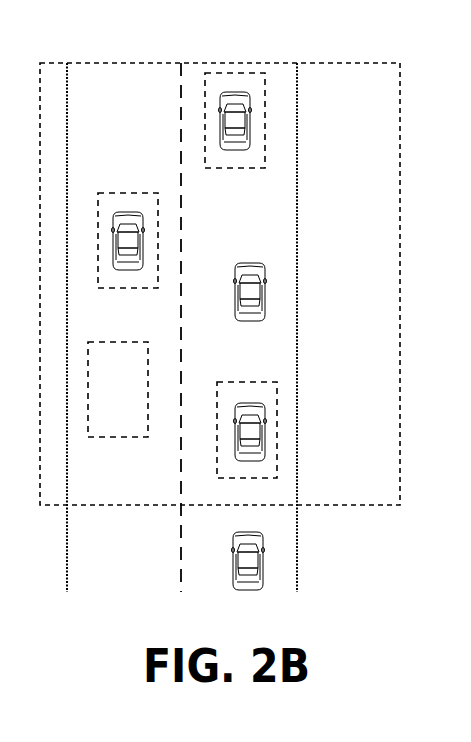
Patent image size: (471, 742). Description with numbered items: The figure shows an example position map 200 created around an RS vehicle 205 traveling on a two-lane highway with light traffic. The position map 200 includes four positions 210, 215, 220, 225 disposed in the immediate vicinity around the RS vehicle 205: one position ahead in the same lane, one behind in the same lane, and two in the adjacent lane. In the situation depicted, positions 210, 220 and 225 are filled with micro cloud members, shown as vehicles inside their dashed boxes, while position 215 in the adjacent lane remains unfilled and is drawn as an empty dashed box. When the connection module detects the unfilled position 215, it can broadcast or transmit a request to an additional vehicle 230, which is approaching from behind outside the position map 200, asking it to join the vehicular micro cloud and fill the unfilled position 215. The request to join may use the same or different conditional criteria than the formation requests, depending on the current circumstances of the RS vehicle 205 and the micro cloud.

The position map 200 is at (337, 63).
The RS vehicle 205 is at (263, 275).
The position 210 is at (277, 423).
The position 215 is at (148, 383).
The position 220 is at (158, 233).
The position 225 is at (265, 128).
The vehicle 230 is at (262, 568).